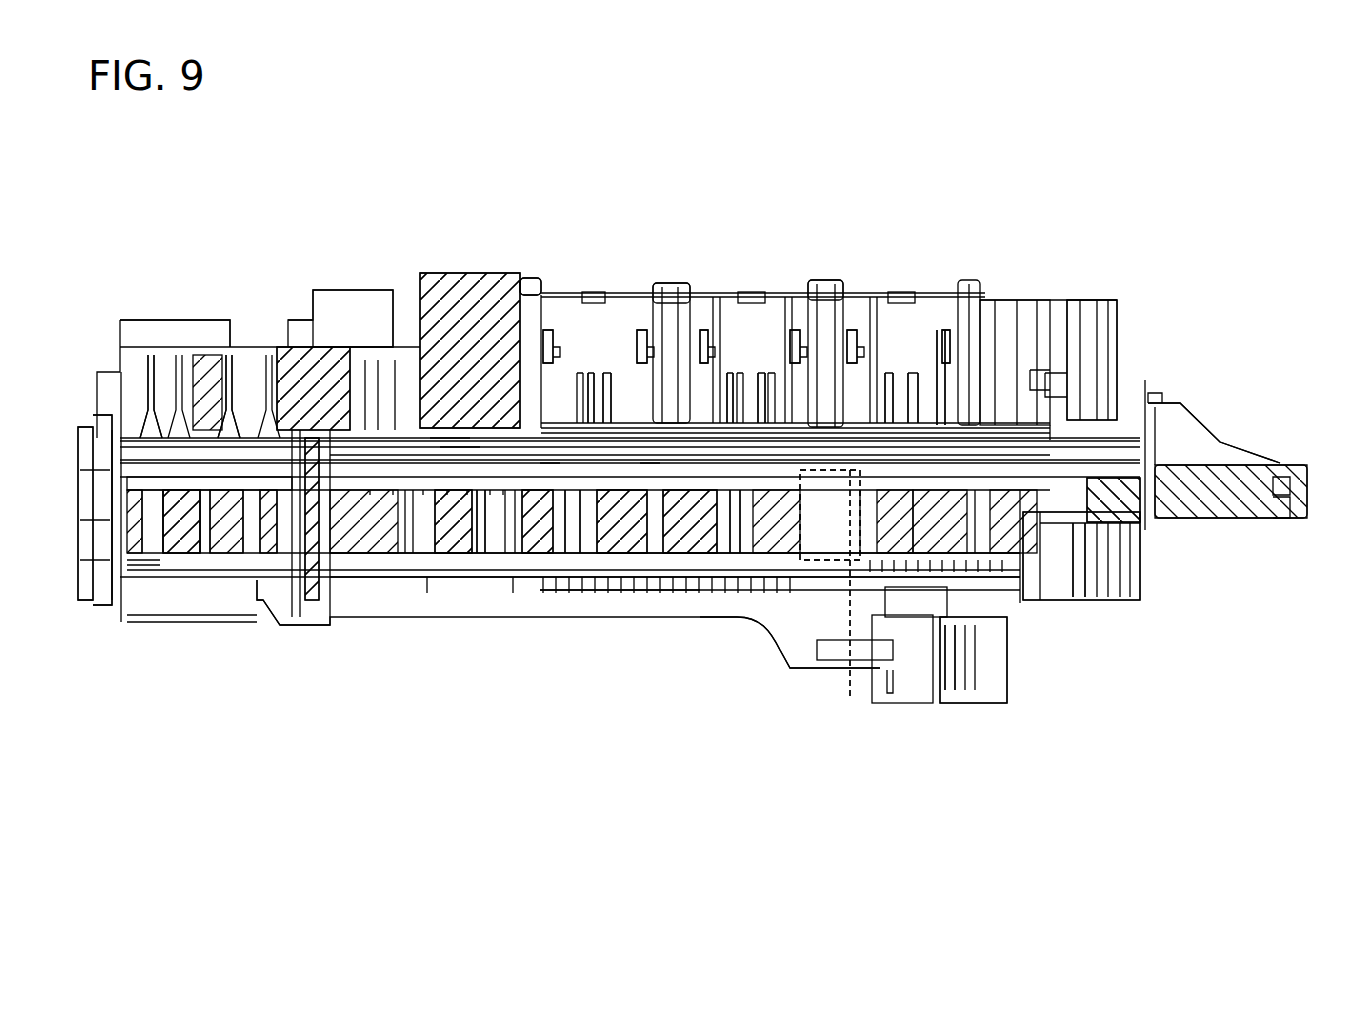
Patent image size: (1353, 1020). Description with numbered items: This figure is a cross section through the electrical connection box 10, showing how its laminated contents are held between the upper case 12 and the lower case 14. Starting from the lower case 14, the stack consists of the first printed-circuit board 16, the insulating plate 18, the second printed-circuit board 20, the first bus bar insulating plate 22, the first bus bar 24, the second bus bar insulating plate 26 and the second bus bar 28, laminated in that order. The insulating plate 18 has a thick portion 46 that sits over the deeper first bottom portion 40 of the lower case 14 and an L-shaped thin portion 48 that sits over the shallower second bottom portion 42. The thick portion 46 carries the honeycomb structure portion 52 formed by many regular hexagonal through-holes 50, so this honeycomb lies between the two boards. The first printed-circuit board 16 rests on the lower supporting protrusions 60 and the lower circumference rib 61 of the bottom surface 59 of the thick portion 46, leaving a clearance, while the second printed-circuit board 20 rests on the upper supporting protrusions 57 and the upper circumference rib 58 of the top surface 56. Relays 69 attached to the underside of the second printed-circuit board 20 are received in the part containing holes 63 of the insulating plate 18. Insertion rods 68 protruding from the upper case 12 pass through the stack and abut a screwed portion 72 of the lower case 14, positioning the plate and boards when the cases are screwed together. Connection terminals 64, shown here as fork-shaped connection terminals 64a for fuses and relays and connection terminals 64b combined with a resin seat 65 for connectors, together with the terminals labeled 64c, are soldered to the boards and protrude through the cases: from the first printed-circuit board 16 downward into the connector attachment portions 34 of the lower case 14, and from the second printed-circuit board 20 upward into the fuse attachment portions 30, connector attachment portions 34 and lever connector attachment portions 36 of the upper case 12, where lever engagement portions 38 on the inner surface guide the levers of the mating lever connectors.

The electrical connection box 10 is at (1117, 212).
The upper case 12 is at (1115, 316).
The lower case 14 is at (822, 672).
The first printed-circuit board 16 is at (491, 582).
The insulating plate 18 is at (424, 582).
The second printed-circuit board 20 is at (451, 465).
The first bus bar insulating plate 22 is at (445, 465).
The first bus bar 24 is at (437, 470).
The second bus bar insulating plate 26 is at (372, 420).
The second bus bar 28 is at (385, 420).
The fuse attachment portions 30 is at (150, 345).
The connector attachment portions 34 is at (985, 652).
The lever connector attachment portions 36 is at (541, 295).
The lever engagement portions 38 is at (576, 420).
The first bottom portion 40 is at (631, 639).
The second bottom portion 42 is at (1142, 540).
The thick portion 46 is at (531, 542).
The thin portion 48 is at (1090, 492).
The regular hexagonal through-holes 50 is at (175, 522).
The honeycomb structure portion 52 is at (681, 538).
The top surface 56 is at (530, 480).
The upper supporting protrusions 57 is at (541, 480).
The upper circumference rib 58 is at (122, 482).
The bottom surface 59 is at (466, 562).
The lower supporting protrusions 60 is at (566, 572).
The lower circumference rib 61 is at (140, 576).
The part containing holes 63 is at (815, 522).
The connection terminals 64 is at (736, 430).
The fork-shaped connection terminals 64a is at (180, 386).
The connection terminals 64b is at (886, 430).
The terminal 64c is at (596, 430).
The resin seat 65 is at (610, 425).
The insertion rods 68 is at (306, 562).
The relays 69 is at (850, 660).
The screwed portion 72 is at (286, 602).